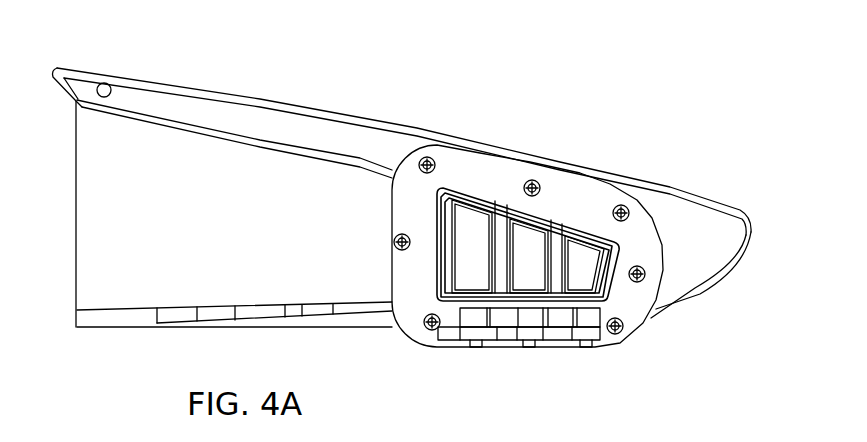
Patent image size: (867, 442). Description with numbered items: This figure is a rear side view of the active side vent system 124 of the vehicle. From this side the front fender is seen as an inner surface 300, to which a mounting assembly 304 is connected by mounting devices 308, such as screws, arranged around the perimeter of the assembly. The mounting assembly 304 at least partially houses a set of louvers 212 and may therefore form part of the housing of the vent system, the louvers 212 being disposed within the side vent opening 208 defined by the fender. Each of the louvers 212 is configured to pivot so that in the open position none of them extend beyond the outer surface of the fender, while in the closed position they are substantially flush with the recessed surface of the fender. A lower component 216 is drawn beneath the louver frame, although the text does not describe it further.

The active side vent system 124 is at (317, 82).
The side vent opening 208 is at (495, 218).
The louvers 212 is at (583, 262).
The lower bracket 216 is at (507, 333).
The inner surface 300 is at (315, 288).
The mounting assembly 304 is at (413, 317).
The mounting devices 308 is at (394, 242).